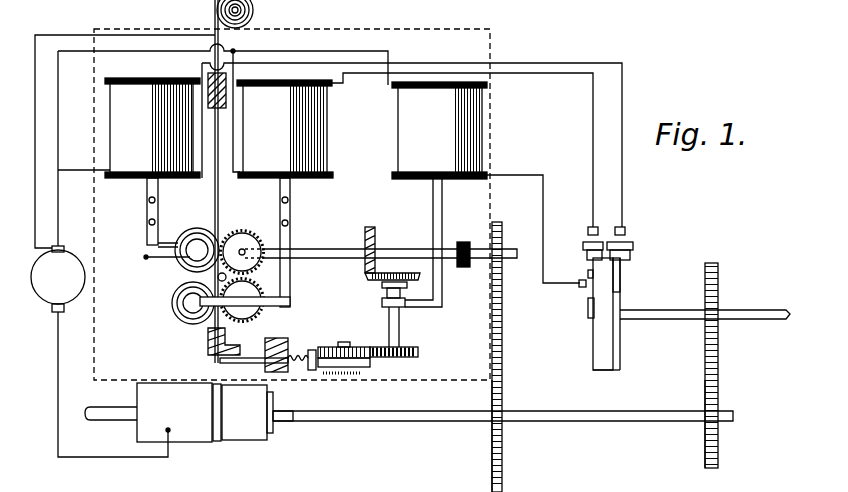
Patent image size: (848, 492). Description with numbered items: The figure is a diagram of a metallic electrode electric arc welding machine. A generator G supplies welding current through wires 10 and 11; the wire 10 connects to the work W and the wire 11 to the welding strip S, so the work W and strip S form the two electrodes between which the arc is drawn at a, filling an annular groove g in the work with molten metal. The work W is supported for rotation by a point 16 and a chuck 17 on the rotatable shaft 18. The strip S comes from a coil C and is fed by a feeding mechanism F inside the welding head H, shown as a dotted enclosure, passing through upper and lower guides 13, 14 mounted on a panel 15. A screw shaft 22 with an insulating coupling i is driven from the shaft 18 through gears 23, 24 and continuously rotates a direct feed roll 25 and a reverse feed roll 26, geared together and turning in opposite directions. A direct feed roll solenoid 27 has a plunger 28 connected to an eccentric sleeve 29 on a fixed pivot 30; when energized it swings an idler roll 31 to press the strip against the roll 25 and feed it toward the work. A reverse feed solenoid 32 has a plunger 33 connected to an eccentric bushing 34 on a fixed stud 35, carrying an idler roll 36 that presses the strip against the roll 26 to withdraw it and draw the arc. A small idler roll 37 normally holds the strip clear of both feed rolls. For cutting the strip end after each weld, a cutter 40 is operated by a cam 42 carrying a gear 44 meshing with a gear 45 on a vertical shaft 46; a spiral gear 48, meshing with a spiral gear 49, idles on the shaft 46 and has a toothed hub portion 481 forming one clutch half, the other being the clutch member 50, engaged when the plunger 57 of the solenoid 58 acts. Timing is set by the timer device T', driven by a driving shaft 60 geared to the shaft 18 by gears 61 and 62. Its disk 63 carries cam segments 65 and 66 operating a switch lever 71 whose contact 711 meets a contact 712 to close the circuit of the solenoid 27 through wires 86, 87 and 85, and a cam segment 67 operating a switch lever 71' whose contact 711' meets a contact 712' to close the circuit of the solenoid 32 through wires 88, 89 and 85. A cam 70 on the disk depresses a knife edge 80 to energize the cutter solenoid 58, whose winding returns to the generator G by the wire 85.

The welding head H is at (114, 29).
The coil C is at (253, 10).
The welding strip S is at (214, 156).
The wire 11 is at (35, 123).
The generator G is at (50, 285).
The wire 10 is at (68, 458).
The wire 87 is at (85, 172).
The direct feed roll solenoid 27 is at (120, 132).
The upper guide 13 is at (214, 110).
The wire 85 is at (353, 49).
The wire 86 is at (601, 63).
The wire 89 is at (235, 127).
The reverse feed solenoid 32 is at (303, 139).
The wire 88 is at (576, 75).
The solenoid 58 is at (470, 132).
The eccentric bushing 34 is at (545, 178).
The knife edge 80 is at (581, 288).
The plunger 57 is at (437, 199).
The spiral gear 49 is at (376, 236).
The spiral gear 48 is at (386, 270).
The hub portion 481 is at (381, 290).
The clutch member 50 is at (381, 304).
The vertical shaft 46 is at (401, 342).
The screw shaft 22 is at (504, 249).
The insulating coupling i is at (463, 245).
The gear 23 is at (491, 276).
The gear 24 is at (503, 388).
The rotatable shaft 18 is at (470, 421).
The work W is at (198, 434).
The arc a is at (217, 383).
The groove g is at (217, 442).
The point 16 is at (120, 413).
The chuck 17 is at (280, 421).
The plunger 28 is at (147, 196).
The feeding mechanism F is at (187, 194).
The plunger 33 is at (290, 195).
The eccentric sleeve 29 is at (191, 231).
The fixed pivot 30 is at (151, 263).
The idler roll 31 is at (186, 263).
The direct feed roll 25 is at (242, 252).
The reverse feed roll 26 is at (262, 314).
The idler roll 37 is at (217, 277).
The idler roll 36 is at (172, 300).
The fixed stud 35 is at (183, 306).
The lower guide 14 is at (208, 348).
The cutter 40 is at (244, 357).
The panel 15 is at (290, 341).
The gear 44 is at (336, 346).
The cam 42 is at (371, 363).
The gear 45 is at (419, 352).
The contact 712' is at (577, 221).
The contact 712 is at (640, 221).
The contact 711' is at (576, 242).
The contact 711 is at (640, 242).
The switch lever 71' is at (579, 261).
The switch lever 71 is at (637, 261).
The cam segment 66 is at (620, 347).
The disk 63 is at (608, 365).
The cam segment 65 is at (621, 281).
The timer device T' is at (638, 298).
The cam 70 is at (588, 306).
The cam segment 67 is at (594, 316).
The driving shaft 60 is at (752, 310).
The gear 61 is at (719, 348).
The gear 62 is at (719, 392).